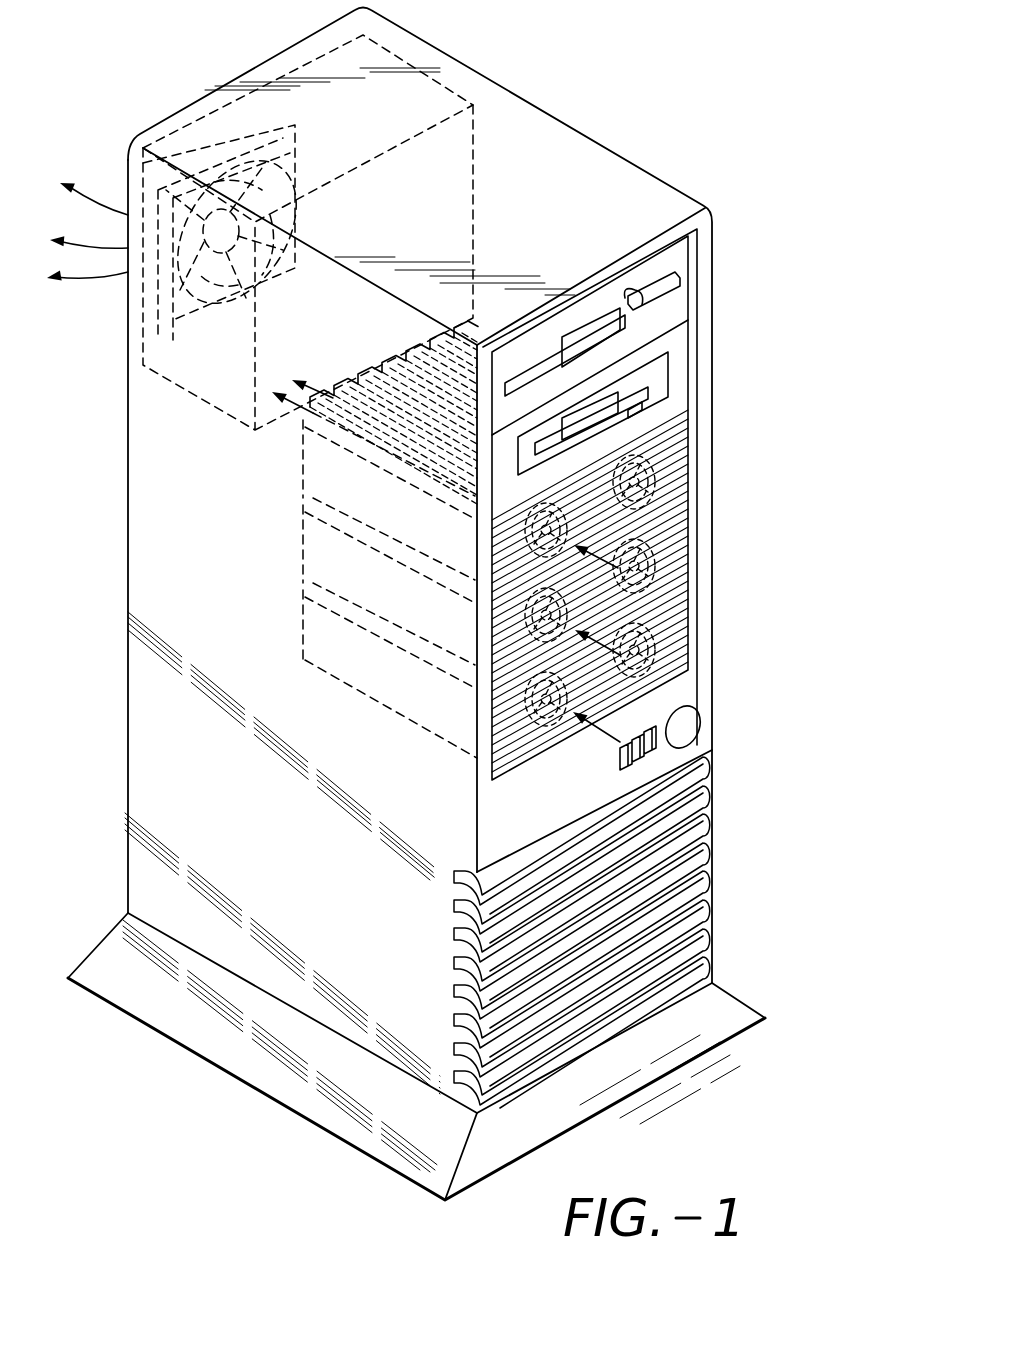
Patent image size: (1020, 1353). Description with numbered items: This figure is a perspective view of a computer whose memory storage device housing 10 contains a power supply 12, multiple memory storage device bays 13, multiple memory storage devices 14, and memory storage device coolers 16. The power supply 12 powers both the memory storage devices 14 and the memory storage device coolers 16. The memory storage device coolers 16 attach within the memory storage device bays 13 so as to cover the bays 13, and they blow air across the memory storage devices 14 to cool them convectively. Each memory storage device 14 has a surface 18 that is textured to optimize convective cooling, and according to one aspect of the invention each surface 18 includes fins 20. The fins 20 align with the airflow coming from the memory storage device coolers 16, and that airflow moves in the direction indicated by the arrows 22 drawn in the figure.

The memory storage device housing 10 is at (585, 52).
The power supply 12 is at (330, 55).
The memory storage device bays 13 is at (696, 472).
The memory storage devices 14 is at (308, 480).
The memory storage device coolers 16 is at (702, 436).
The surface 18 is at (302, 438).
The fins 20 is at (480, 330).
The arrows 22 is at (463, 322).